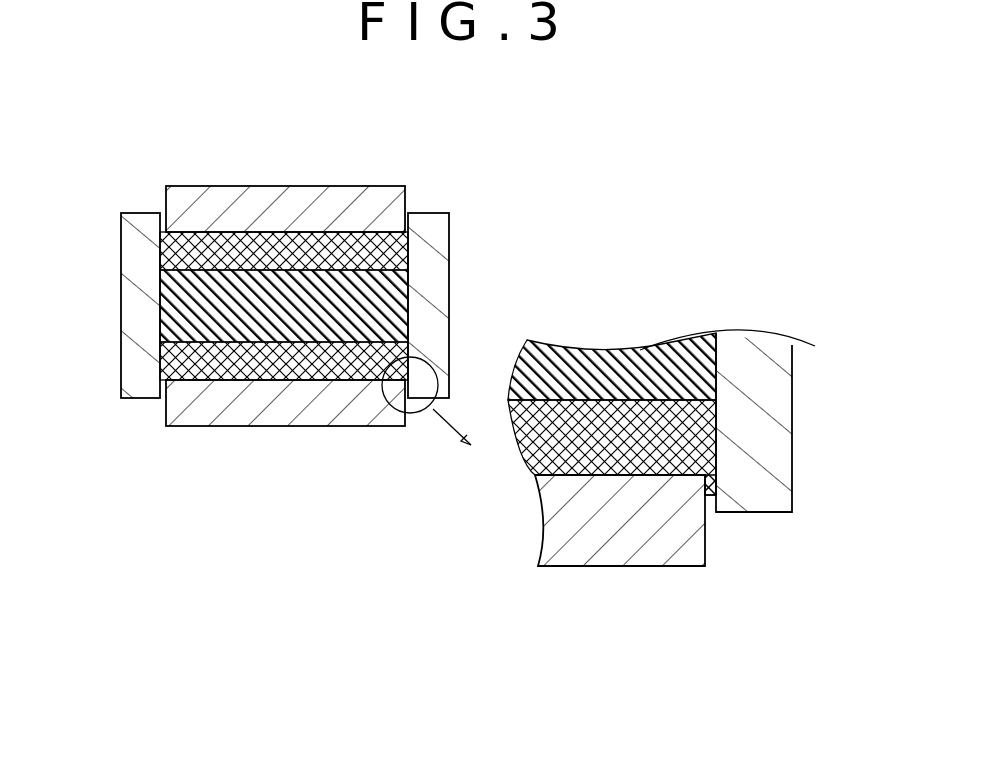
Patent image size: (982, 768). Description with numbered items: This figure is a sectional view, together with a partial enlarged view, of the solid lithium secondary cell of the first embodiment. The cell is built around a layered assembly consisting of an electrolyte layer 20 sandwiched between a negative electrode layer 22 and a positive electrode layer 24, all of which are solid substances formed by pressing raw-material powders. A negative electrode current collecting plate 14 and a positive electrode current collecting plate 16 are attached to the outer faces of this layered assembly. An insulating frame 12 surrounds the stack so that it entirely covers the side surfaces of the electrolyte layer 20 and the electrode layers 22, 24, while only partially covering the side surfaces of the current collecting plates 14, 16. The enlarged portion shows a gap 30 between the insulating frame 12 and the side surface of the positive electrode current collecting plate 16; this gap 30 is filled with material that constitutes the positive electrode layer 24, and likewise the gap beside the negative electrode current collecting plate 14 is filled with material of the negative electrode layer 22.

The insulating frame 12 is at (449, 230).
The negative electrode current collecting plate 14 is at (366, 186).
The positive electrode current collecting plate 16 is at (303, 426).
The electrolyte layer 20 is at (408, 297).
The negative electrode layer 22 is at (408, 237).
The positive electrode layer 24 is at (162, 352).
The gap 30 is at (718, 486).